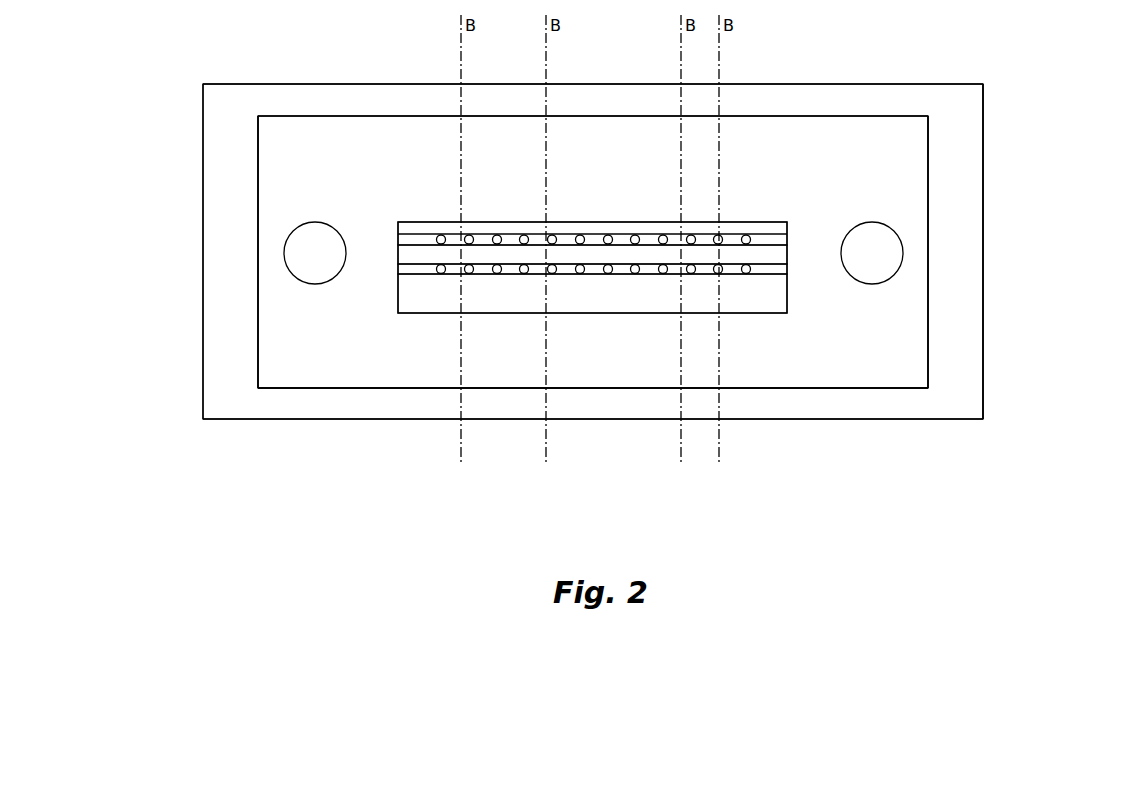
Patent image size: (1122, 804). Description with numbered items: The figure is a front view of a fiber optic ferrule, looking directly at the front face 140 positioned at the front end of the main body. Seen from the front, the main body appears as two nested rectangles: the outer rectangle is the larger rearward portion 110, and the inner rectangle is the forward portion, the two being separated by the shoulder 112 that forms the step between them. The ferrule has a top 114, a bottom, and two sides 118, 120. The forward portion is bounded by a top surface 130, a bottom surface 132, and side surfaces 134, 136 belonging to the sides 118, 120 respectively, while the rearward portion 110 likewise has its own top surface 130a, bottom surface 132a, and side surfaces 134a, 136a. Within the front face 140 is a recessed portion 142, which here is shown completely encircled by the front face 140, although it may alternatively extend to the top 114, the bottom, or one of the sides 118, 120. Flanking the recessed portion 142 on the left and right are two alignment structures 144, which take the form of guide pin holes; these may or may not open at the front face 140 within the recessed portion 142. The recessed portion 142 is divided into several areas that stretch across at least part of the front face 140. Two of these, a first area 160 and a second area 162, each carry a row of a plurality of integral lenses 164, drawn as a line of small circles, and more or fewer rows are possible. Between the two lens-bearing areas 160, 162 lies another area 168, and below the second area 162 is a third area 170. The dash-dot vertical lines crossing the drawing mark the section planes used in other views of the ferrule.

The rearward portion 110 is at (805, 84).
The shoulder 112 is at (970, 311).
The top 114 is at (357, 116).
The side 118 is at (928, 200).
The side 120 is at (258, 280).
The top surface 130 is at (757, 116).
The top surface 130a is at (905, 84).
The bottom surface 132 is at (343, 388).
The bottom surface 132a is at (893, 420).
The side surface 134 is at (928, 243).
The side surface 134a is at (983, 124).
The side surface 136 is at (258, 335).
The side surface 136a is at (203, 147).
The front face 140 is at (800, 388).
The recessed portion 142 is at (437, 313).
The alignment structures 144 is at (308, 285).
The first area 160 is at (787, 240).
The second area 162 is at (787, 272).
The integral lenses 164 is at (746, 235).
The area 168 is at (787, 253).
The third area 170 is at (750, 305).